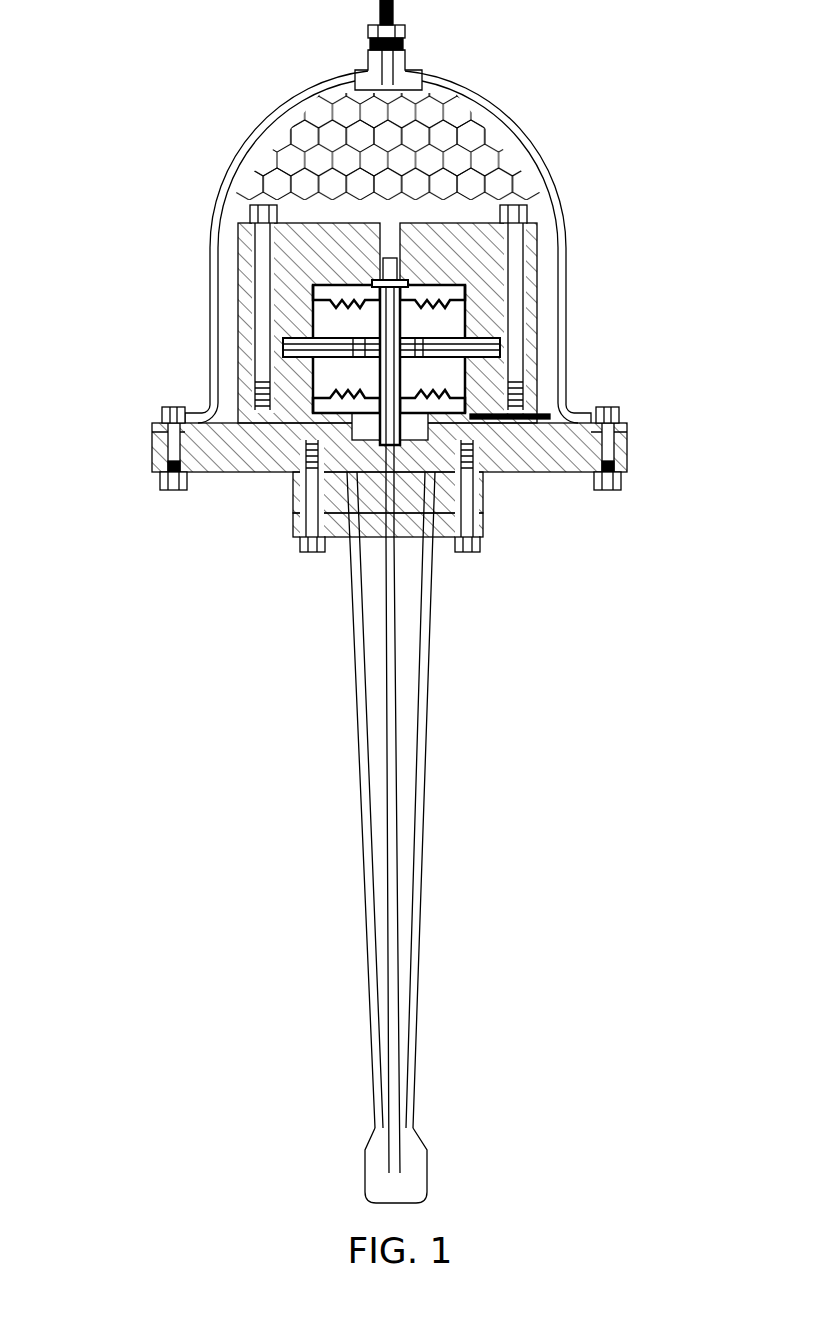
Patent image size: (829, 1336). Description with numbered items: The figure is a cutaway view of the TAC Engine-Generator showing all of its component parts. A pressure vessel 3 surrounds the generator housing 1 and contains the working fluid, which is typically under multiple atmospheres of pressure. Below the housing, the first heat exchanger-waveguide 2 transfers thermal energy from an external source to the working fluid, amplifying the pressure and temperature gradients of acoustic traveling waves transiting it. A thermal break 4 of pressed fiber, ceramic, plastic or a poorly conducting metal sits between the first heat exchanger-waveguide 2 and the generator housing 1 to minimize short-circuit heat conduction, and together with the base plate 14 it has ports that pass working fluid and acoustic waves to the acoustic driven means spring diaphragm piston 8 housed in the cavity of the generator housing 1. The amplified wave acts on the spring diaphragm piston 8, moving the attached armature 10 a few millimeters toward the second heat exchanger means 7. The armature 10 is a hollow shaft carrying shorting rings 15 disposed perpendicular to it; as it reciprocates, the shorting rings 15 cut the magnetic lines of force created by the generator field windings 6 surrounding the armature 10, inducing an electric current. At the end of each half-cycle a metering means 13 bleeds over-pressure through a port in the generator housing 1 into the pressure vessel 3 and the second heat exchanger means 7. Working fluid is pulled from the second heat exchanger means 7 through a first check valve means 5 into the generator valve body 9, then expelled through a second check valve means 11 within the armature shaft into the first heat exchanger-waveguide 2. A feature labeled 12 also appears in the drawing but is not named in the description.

The generator housing 1 is at (630, 455).
The first heat exchanger-waveguide 2 is at (430, 778).
The pressure vessel 3 is at (460, 78).
The thermal break 4 is at (293, 497).
The first check valve means 5 is at (388, 258).
The generator field windings 6 is at (380, 332).
The second heat exchanger means 7 is at (352, 145).
The acoustic driven means spring diaphragm piston 8 is at (340, 390).
The generator valve body 9 is at (467, 222).
The armature 10 is at (377, 287).
The second check valve means 11 is at (405, 288).
The bellows 12 is at (440, 305).
The metering means 13 is at (540, 416).
The base plate 14 is at (483, 526).
The shorting rings 15 is at (420, 340).